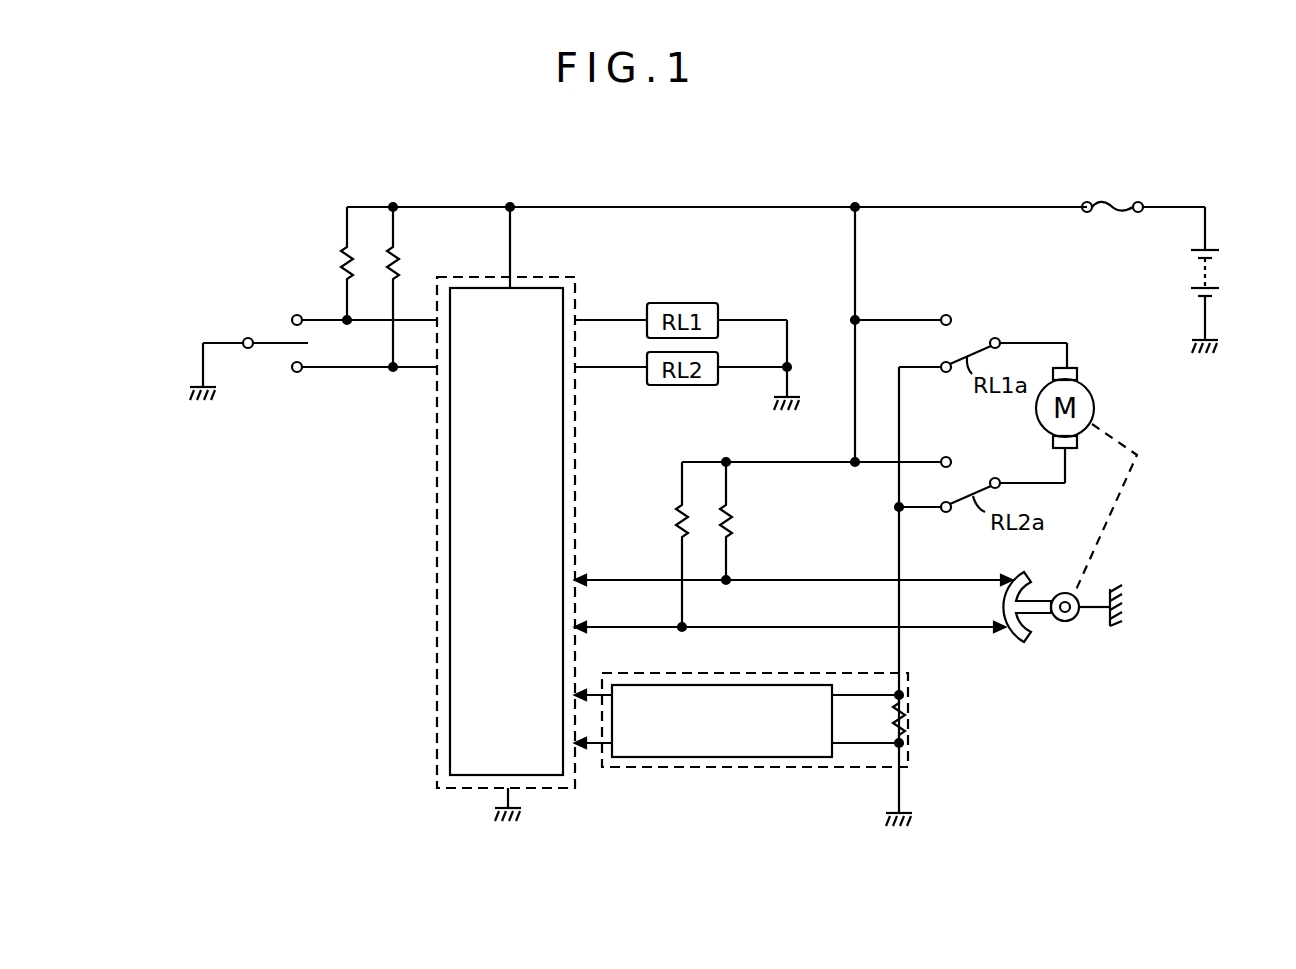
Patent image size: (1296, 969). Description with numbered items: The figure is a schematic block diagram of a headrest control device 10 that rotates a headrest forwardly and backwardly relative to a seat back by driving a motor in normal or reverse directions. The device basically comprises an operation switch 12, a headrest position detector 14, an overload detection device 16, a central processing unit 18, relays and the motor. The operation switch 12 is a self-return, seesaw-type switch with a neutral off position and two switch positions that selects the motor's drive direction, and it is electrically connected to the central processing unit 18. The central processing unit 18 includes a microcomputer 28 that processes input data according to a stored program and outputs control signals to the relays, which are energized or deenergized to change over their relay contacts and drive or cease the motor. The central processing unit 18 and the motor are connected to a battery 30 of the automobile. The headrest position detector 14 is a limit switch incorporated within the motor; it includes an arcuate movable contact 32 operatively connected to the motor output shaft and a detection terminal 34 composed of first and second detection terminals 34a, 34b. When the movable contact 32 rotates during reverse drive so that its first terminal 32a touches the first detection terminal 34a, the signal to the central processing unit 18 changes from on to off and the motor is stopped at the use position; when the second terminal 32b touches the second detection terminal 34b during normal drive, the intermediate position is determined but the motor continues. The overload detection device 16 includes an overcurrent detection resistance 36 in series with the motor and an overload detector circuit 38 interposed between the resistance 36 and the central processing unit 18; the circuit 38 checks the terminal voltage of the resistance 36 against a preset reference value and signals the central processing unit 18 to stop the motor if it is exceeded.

The headrest control device 10 is at (1023, 155).
The operation switch 12 is at (263, 320).
The headrest position detector 14 is at (1052, 627).
The overload detection device 16 is at (769, 737).
The central processing unit 18 is at (500, 561).
The microcomputer 28 is at (453, 776).
The battery 30 is at (1212, 250).
The arcuate movable contact 32 is at (1063, 622).
The first terminal 32a is at (1029, 568).
The second terminal 32b is at (1019, 658).
The detection terminal 34 is at (793, 618).
The first detection terminal 34a is at (932, 579).
The second detection terminal 34b is at (790, 615).
The overcurrent detection resistance 36 is at (905, 716).
The overload detector circuit 38 is at (765, 684).